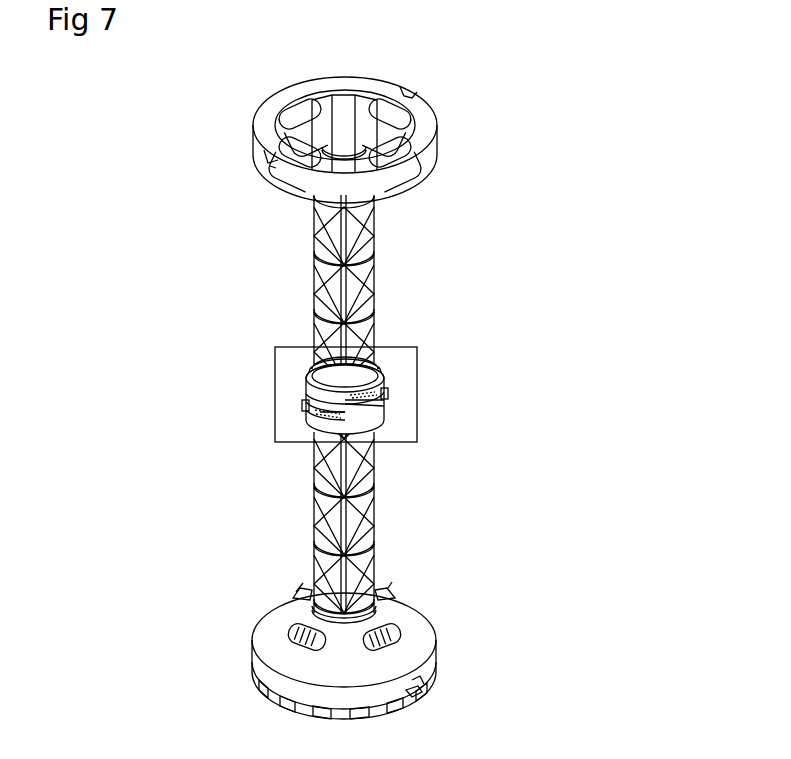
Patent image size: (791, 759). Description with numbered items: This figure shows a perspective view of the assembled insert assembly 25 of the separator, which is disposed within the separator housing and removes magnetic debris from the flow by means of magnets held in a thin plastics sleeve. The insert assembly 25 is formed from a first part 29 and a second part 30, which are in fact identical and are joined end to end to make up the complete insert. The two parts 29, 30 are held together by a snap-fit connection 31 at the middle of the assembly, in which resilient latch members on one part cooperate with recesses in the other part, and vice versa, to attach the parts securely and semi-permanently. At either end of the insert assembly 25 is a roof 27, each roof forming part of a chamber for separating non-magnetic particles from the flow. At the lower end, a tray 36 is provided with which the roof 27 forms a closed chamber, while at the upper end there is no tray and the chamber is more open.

The insert assembly 25 is at (454, 398).
The roof 27 is at (410, 143).
The first part 29 is at (350, 323).
The second part 30 is at (340, 508).
The snap-fit connection 31 is at (410, 403).
The tray 36 is at (403, 697).